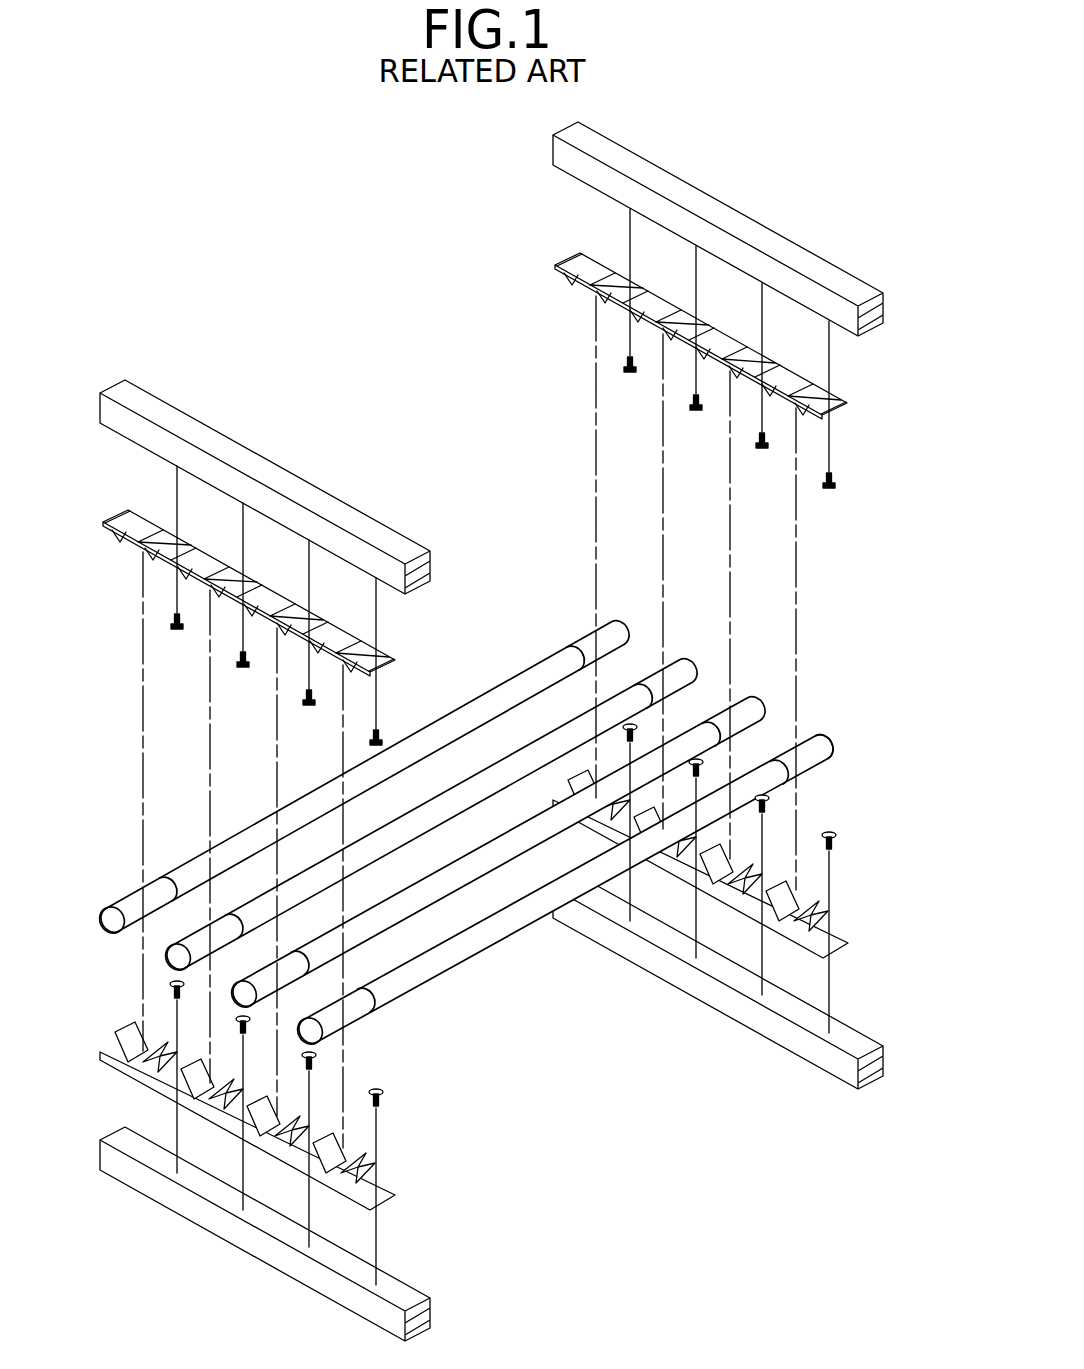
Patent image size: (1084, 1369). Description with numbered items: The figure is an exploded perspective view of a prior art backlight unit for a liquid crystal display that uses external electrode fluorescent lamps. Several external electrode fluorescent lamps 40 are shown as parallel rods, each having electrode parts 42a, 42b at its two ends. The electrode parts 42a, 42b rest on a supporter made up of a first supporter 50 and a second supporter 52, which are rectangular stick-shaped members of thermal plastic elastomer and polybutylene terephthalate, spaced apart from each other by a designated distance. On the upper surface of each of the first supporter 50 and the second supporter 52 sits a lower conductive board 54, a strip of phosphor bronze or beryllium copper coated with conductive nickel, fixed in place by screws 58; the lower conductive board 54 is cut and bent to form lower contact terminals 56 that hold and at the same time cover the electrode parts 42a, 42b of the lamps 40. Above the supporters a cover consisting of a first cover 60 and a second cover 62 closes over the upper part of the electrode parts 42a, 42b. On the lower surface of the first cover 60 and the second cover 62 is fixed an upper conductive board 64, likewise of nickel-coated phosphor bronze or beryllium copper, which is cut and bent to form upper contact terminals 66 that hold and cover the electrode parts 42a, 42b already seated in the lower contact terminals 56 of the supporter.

The external electrode fluorescent lamp 40 is at (502, 843).
The electrode part 42a is at (353, 1020).
The electrode part 42b is at (832, 746).
The first supporter 50 is at (380, 1324).
The second supporter 52 is at (830, 1068).
The lower conductive board 54 is at (160, 1084).
The lower contact terminal 56 is at (118, 1056).
The screw 58 is at (162, 990).
The first cover 60 is at (208, 428).
The second cover 62 is at (660, 174).
The upper conductive board 64 is at (158, 527).
The upper contact terminal 66 is at (124, 545).